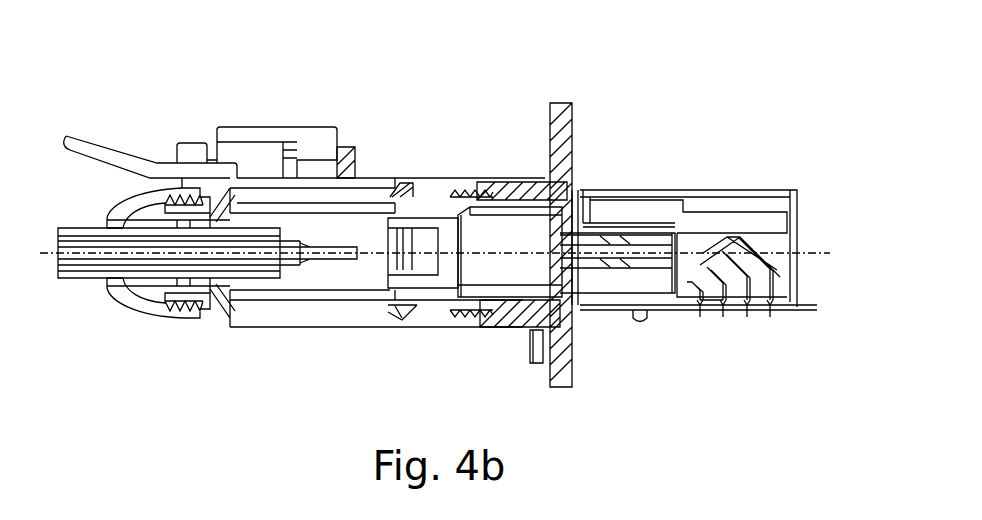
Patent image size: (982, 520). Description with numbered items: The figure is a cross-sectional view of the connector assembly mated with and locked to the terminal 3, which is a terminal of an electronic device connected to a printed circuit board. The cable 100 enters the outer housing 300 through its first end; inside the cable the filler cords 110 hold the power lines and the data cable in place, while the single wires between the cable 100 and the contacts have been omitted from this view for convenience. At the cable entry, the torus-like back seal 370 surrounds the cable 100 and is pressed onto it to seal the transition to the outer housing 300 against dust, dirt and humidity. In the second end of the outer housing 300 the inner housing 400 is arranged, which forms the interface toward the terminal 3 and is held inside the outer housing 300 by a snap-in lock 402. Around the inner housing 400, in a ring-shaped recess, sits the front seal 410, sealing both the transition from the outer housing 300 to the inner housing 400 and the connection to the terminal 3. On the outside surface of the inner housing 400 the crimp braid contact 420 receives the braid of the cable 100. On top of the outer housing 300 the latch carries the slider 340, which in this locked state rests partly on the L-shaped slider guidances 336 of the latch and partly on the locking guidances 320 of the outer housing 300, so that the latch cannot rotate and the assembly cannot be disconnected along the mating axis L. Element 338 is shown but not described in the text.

The terminal 3 is at (705, 190).
The mating axis L is at (815, 253).
The cable 100 is at (72, 260).
The filler cords 110 is at (310, 265).
The outer housing 300 is at (345, 310).
The locking guidances 320 is at (348, 150).
The slider guidances 336 is at (188, 143).
The release lever 338 is at (84, 140).
The slider 340 is at (262, 142).
The back seal 370 is at (165, 300).
The inner housing 400 is at (503, 230).
The snap-in lock 402 is at (400, 322).
The front seal 410 is at (462, 318).
The crimp braid contact 420 is at (403, 196).